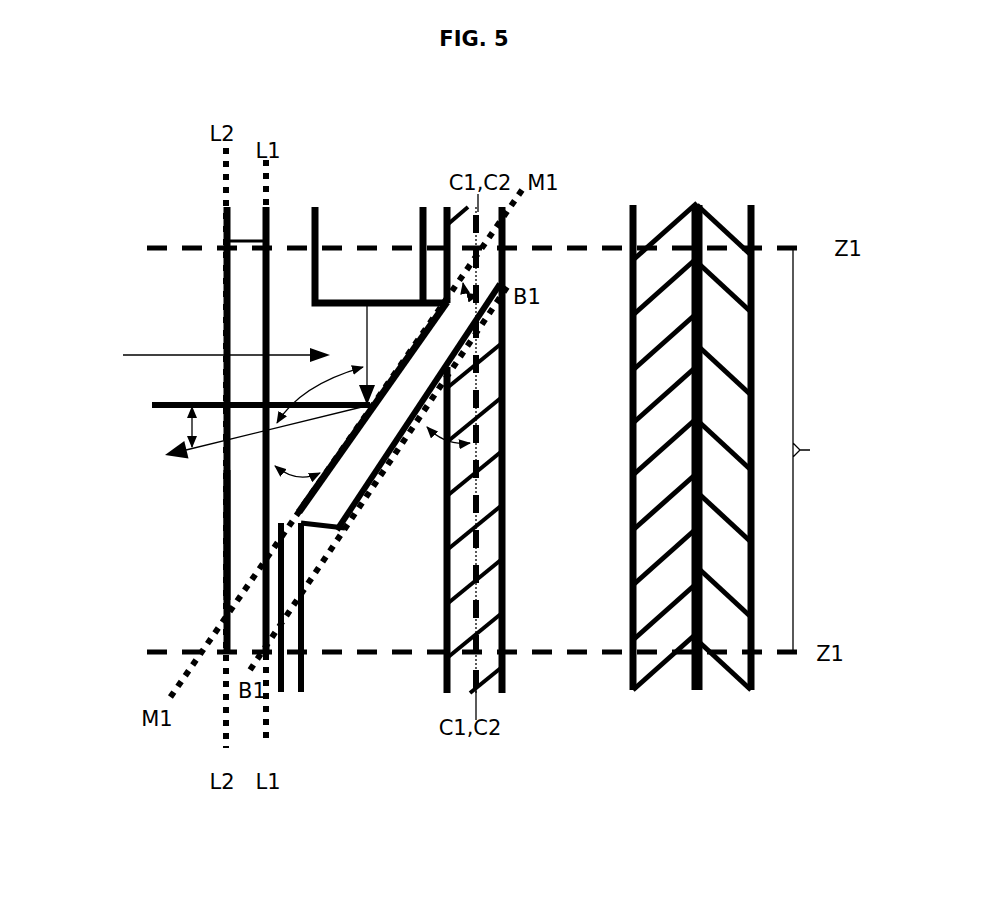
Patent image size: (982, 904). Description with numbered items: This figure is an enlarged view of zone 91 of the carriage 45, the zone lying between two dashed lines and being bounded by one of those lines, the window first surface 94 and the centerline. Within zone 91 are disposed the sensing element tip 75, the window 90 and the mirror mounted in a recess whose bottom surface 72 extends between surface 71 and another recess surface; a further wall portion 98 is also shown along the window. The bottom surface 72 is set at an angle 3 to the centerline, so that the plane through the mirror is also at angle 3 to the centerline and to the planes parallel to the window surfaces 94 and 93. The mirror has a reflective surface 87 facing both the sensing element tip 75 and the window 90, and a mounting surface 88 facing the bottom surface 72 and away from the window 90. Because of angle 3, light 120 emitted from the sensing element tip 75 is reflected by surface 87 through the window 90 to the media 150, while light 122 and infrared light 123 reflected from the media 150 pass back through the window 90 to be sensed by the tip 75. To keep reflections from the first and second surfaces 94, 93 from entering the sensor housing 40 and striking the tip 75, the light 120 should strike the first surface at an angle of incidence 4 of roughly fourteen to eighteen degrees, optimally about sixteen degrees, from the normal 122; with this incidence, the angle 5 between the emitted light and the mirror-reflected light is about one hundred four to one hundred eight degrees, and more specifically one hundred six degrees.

The sensing element tip 75 is at (347, 300).
The second surface 93 is at (226, 286).
The first surface 94 is at (265, 319).
The wall portion 98 is at (226, 522).
The infrared light 123 is at (137, 355).
The media 150 is at (73, 369).
The light reflected from media 122 is at (178, 403).
The light 120 is at (366, 341).
The angle 5 is at (320, 395).
The angle of incidence 4 is at (204, 427).
The angle 3 is at (517, 265).
The window 90 is at (206, 599).
The reflective surface 87 is at (343, 453).
The mounting surface 88 is at (388, 471).
The bottom surface 72 is at (400, 443).
The surface 71 is at (322, 528).
The zone 91 is at (830, 451).
The sensor housing 40 is at (756, 676).
The carriage 45 is at (668, 689).